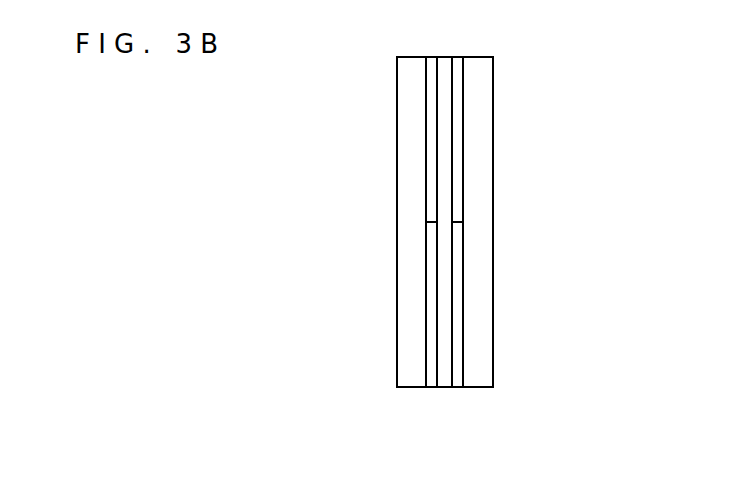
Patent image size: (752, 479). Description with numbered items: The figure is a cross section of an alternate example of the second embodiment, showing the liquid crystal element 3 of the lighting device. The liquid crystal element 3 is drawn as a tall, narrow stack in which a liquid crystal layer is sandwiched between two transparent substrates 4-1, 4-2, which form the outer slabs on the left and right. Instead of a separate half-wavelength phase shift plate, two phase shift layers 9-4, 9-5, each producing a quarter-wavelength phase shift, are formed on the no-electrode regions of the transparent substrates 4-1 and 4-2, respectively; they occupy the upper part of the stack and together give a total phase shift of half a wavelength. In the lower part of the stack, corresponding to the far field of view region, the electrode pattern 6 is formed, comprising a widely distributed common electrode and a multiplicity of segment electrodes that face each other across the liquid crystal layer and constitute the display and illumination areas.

The liquid crystal element 3 is at (443, 251).
The transparent substrate 4-1 is at (407, 284).
The transparent substrate 4-2 is at (483, 282).
The phase shift layer 9-4 is at (431, 145).
The phase shift layer 9-5 is at (457, 141).
The electrode pattern 6 is at (447, 333).